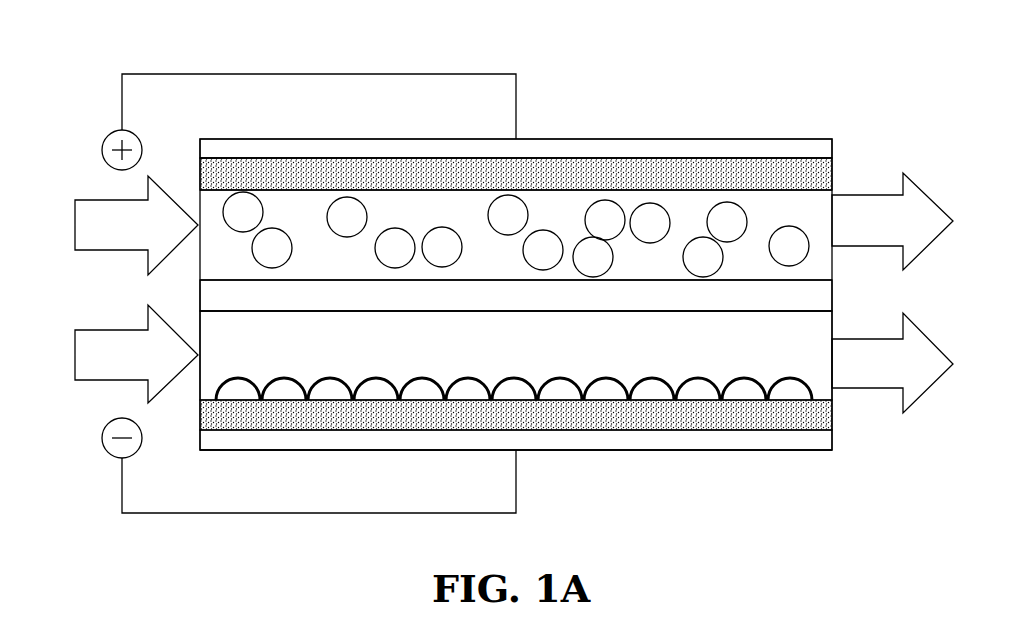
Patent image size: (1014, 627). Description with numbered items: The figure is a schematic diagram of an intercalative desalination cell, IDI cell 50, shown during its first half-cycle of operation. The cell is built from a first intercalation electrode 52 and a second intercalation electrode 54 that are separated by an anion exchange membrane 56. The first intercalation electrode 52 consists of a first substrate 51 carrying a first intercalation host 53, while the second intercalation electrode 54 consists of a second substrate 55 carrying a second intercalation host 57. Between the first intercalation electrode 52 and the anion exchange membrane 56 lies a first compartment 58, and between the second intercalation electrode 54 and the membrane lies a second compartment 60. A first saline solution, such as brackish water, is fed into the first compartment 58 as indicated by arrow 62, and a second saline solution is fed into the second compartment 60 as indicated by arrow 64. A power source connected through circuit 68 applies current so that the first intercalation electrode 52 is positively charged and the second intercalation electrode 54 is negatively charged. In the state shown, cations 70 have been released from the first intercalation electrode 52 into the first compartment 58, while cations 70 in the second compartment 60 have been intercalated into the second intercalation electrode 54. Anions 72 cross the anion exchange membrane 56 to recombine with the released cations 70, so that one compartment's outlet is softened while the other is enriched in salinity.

The IDI cell 50 is at (824, 486).
The first substrate 51 is at (834, 148).
The first intercalation electrode 52 is at (733, 123).
The first intercalation host 53 is at (834, 174).
The second intercalation electrode 54 is at (633, 476).
The second substrate 55 is at (834, 437).
The anion exchange membrane 56 is at (834, 295).
The second intercalation host 57 is at (834, 413).
The first compartment 58 is at (516, 233).
The second compartment 60 is at (516, 355).
The arrow 62 is at (74, 225).
The arrow 64 is at (74, 355).
The circuit 68 is at (255, 74).
The cations 70 is at (422, 402).
The anions 72 is at (650, 203).